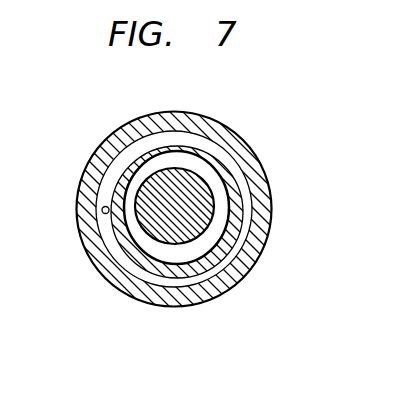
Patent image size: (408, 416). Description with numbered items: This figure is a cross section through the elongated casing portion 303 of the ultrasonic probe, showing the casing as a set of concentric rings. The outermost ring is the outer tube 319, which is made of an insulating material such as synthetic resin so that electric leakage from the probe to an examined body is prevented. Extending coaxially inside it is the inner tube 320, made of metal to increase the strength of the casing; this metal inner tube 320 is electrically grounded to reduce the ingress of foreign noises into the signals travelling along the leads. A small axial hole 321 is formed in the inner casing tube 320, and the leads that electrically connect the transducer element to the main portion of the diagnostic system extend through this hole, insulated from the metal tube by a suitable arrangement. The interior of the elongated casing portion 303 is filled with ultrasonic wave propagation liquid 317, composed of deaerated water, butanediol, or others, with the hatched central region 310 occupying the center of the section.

The elongated casing portion 303 is at (220, 125).
The outer tube 319 is at (240, 158).
The inner tube 320 is at (242, 208).
The axial hole 321 is at (102, 210).
The ultrasonic wave propagation liquid 317 is at (140, 243).
The central conductor core 310 is at (175, 240).